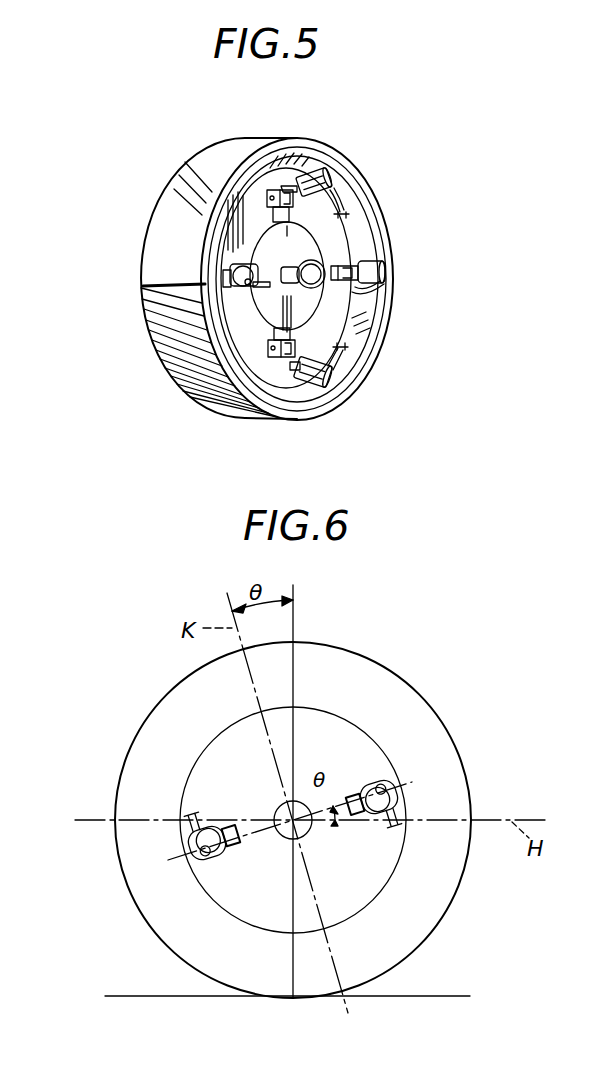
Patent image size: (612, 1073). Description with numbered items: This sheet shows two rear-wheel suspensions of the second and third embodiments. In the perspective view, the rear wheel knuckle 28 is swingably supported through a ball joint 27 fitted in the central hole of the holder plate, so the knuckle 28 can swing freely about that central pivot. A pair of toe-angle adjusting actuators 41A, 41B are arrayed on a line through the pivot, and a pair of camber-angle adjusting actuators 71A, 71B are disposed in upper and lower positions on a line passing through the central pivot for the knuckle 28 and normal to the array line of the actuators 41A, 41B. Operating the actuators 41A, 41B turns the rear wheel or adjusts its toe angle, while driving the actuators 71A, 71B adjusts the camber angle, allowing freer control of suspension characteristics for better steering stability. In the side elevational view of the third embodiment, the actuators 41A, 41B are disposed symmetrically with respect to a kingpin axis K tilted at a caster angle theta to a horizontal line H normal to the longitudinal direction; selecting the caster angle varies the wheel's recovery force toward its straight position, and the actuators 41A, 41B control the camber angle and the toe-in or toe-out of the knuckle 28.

In FIG. 5, the rear wheel knuckle 28 is at (246, 157).
In FIG. 6, the rear wheel knuckle 28 is at (389, 862).
In FIG. 5, the ball joint 27 is at (323, 262).
In FIG. 5, the toe-angle adjusting actuator 41A is at (372, 262).
In FIG. 6, the toe-angle adjusting actuator 41A is at (222, 860).
In FIG. 5, the toe-angle adjusting actuator 41B is at (225, 280).
In FIG. 6, the toe-angle adjusting actuator 41B is at (382, 782).
In FIG. 5, the camber-angle adjusting actuator 71A is at (307, 170).
In FIG. 5, the camber-angle adjusting actuator 71B is at (308, 384).